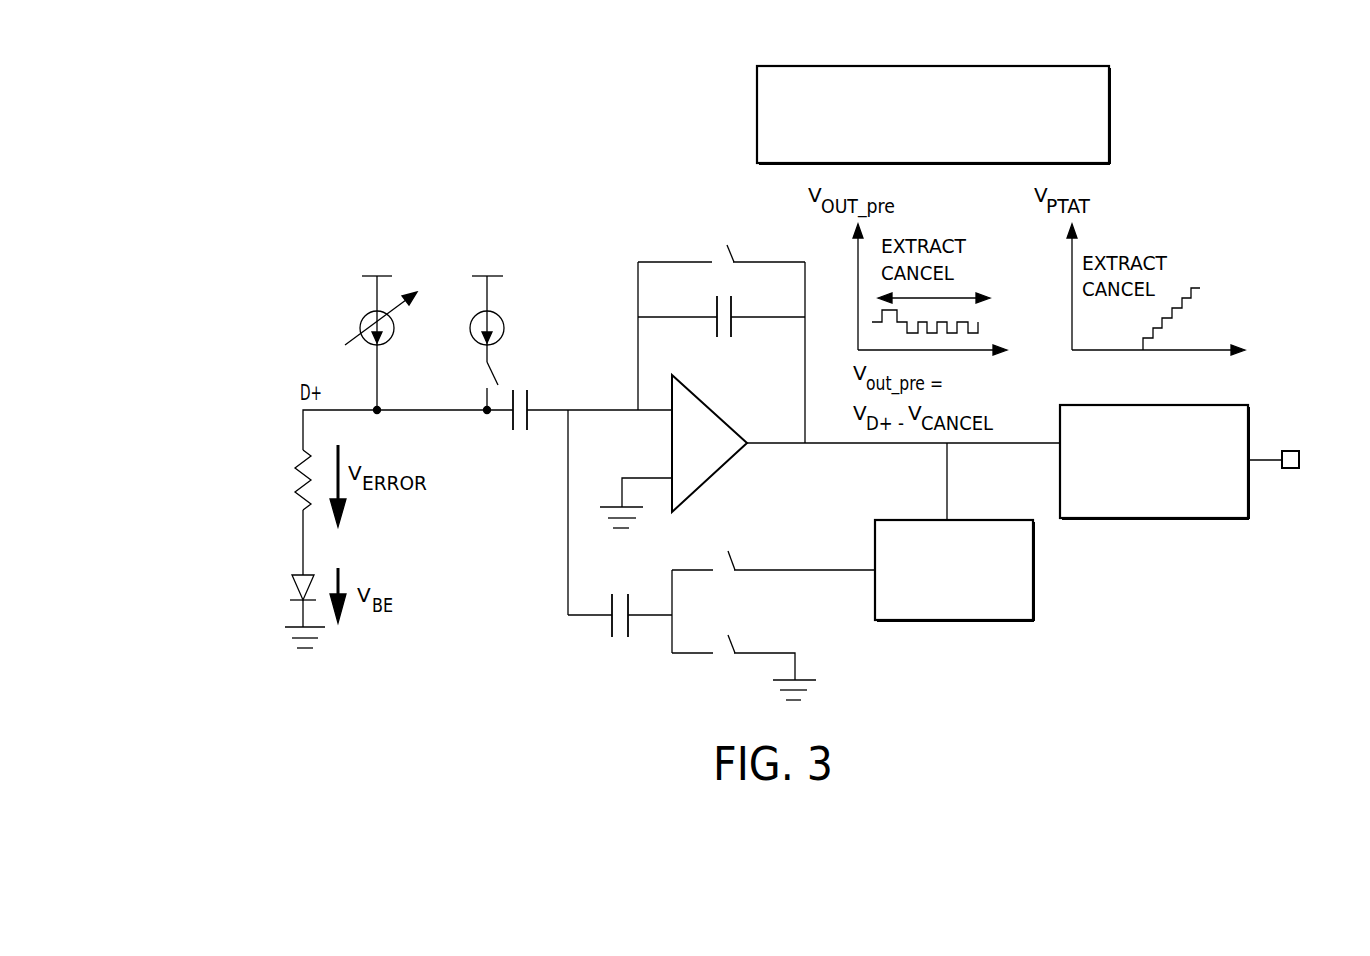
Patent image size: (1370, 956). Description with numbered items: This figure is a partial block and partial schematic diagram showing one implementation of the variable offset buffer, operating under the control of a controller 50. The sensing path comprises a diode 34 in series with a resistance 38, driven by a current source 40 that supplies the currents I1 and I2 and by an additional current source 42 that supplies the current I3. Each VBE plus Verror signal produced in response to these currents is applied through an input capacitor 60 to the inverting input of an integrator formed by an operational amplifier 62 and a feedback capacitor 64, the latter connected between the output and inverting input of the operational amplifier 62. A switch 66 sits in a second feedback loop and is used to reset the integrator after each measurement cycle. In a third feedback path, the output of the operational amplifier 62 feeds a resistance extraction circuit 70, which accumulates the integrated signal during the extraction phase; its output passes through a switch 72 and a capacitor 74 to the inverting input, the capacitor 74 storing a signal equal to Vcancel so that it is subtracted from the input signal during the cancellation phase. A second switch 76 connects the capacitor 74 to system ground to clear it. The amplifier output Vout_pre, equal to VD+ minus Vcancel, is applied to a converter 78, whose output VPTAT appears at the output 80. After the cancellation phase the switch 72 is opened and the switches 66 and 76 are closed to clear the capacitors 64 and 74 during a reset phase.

The diode 34 is at (298, 573).
The resistance 38 is at (301, 460).
The current source 40 is at (372, 311).
The additional current source 42 is at (482, 311).
The controller 50 is at (995, 127).
The input capacitor 60 is at (530, 396).
The operational amplifier 62 is at (713, 411).
The feedback capacitor 64 is at (735, 302).
The switch 66 is at (735, 247).
The resistance extraction circuit 70 is at (1004, 623).
The switch 72 is at (726, 556).
The capacitor 74 is at (611, 626).
The second switch 76 is at (735, 638).
The converter 78 is at (1193, 521).
The output 80 is at (1293, 449).